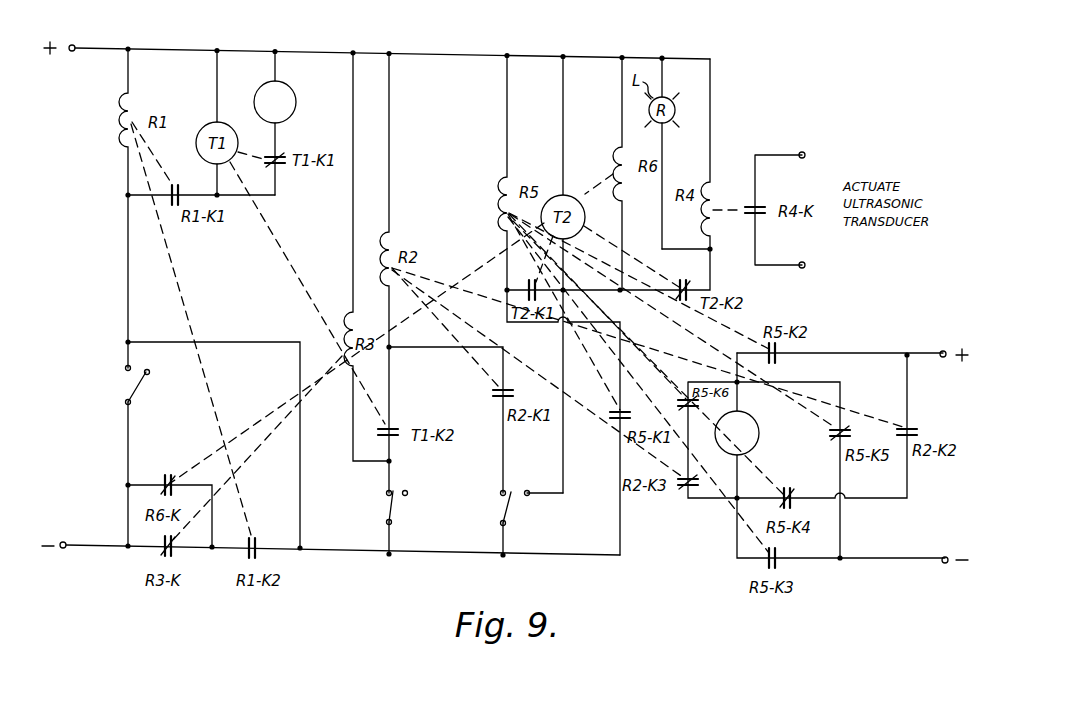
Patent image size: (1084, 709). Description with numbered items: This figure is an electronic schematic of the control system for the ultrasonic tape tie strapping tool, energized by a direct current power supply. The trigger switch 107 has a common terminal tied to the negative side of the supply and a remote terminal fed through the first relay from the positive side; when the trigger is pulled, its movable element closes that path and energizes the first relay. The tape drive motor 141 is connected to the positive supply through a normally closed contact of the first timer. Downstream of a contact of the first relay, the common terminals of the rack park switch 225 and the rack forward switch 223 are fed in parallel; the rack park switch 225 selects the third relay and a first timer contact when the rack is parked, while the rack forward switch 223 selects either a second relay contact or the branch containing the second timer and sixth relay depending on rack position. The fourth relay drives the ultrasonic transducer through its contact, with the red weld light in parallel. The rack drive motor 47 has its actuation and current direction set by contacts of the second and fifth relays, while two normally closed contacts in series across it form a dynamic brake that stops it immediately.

The tape drive motor 141 is at (256, 91).
The trigger switch 107 is at (138, 387).
The rack park switch 225 is at (385, 506).
The rack forward switch 223 is at (510, 498).
The rack drive motor 47 is at (758, 428).